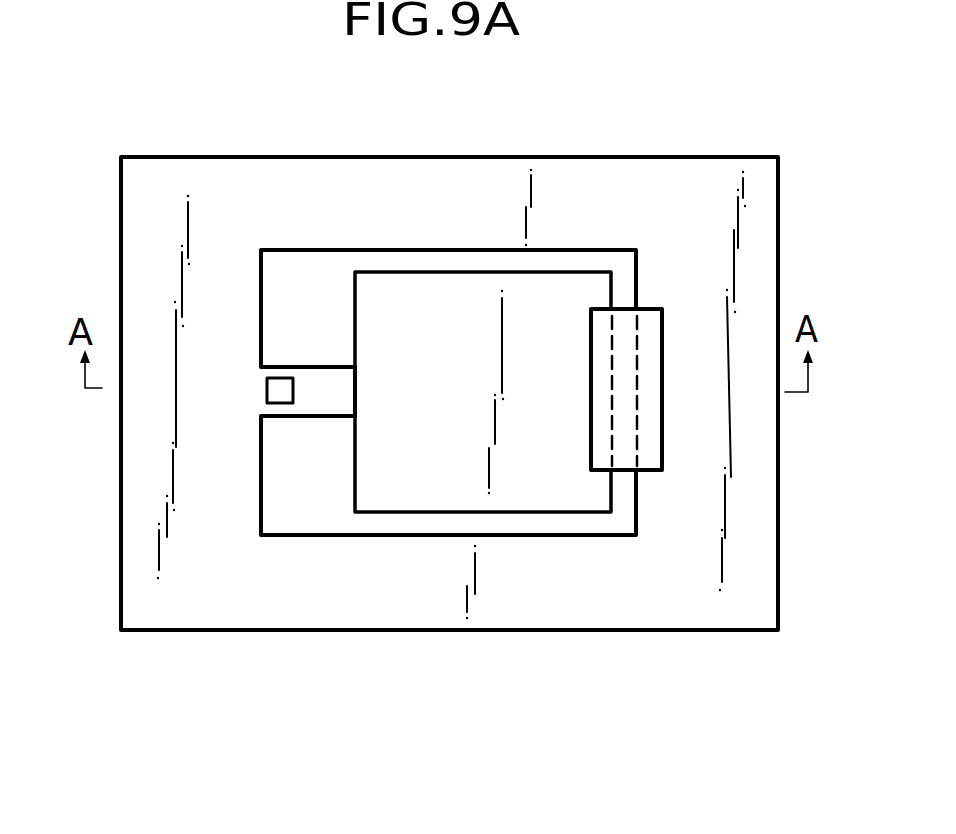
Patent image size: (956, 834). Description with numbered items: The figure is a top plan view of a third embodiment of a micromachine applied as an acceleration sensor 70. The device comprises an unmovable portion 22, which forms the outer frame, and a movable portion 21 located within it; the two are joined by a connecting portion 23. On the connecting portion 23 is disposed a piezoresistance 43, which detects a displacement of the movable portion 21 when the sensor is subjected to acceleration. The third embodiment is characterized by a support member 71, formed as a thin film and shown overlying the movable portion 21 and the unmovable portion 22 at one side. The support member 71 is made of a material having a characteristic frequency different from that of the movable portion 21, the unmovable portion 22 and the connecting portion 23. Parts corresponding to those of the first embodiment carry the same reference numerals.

The acceleration sensor 70 is at (62, 234).
The movable portion 21 is at (520, 493).
The unmovable portion 22 is at (743, 593).
The connecting portion 23 is at (317, 389).
The piezoresistance 43 is at (268, 392).
The support member 71 is at (650, 418).